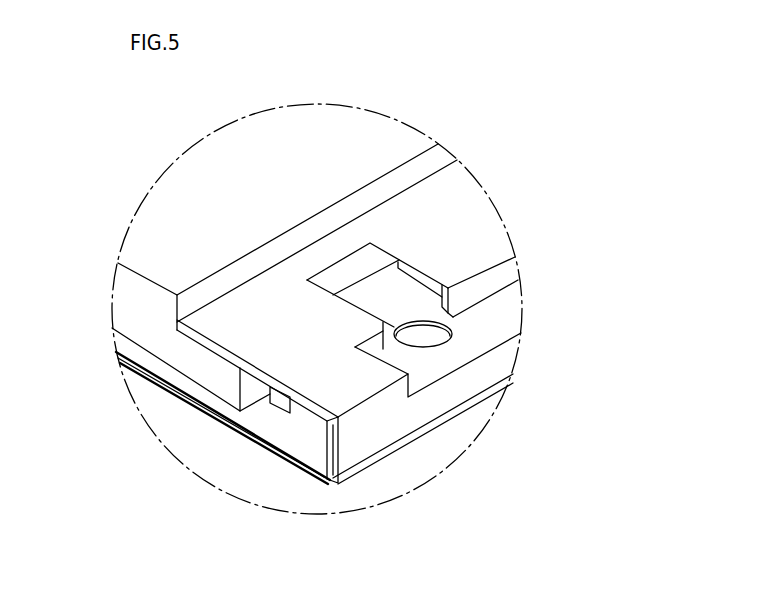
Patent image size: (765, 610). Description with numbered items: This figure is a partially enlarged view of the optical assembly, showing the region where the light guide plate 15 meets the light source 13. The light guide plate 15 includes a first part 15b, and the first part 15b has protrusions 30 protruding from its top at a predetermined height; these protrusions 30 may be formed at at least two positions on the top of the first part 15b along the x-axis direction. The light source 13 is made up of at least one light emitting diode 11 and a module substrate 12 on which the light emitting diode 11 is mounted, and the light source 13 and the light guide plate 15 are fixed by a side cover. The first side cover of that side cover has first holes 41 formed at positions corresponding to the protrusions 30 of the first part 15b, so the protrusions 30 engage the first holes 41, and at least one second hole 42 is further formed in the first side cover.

The light guide plate 15 is at (153, 222).
The first part 15b is at (204, 372).
The light emitting diode 11 is at (283, 402).
The module substrate 12 is at (300, 438).
The light source 13 is at (293, 548).
The protrusion 30 is at (351, 270).
The first hole 41 is at (424, 292).
The second hole 42 is at (423, 335).